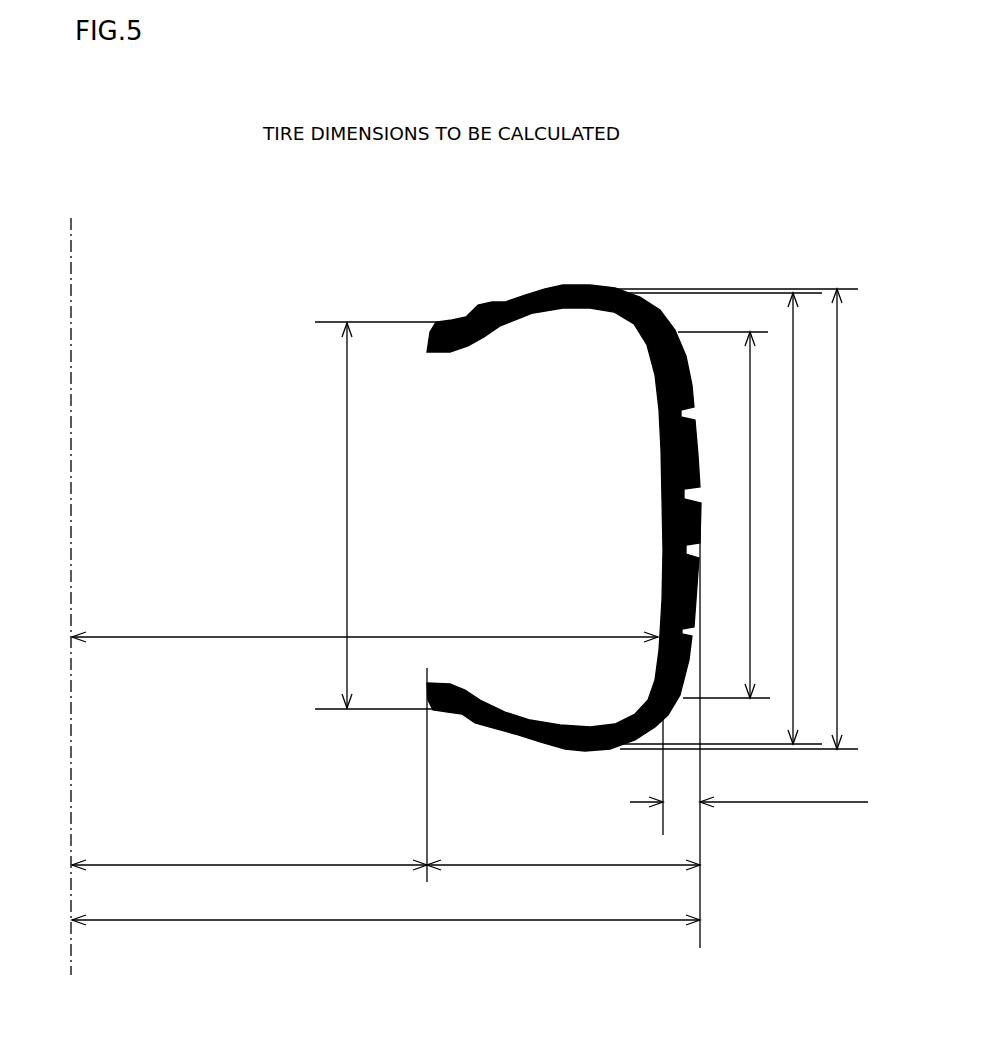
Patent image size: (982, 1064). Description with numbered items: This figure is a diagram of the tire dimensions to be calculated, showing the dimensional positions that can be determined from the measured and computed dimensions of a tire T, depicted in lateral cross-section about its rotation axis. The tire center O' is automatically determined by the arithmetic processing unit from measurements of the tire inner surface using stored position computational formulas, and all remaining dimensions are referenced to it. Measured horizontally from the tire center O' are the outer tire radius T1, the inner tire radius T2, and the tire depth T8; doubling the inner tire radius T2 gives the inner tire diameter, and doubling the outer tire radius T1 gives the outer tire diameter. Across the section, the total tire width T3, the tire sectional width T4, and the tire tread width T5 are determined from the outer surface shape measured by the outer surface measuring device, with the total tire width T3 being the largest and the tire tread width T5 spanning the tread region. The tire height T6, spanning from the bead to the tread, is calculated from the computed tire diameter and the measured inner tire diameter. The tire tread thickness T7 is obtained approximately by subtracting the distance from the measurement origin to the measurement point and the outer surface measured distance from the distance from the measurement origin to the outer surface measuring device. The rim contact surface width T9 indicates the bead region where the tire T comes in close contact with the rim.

The tire T is at (511, 300).
The tire center O' is at (73, 580).
The outer tire radius T1 is at (386, 730).
The inner tire radius T2 is at (249, 851).
The total tire width T3 is at (710, 519).
The tire sectional width T4 is at (695, 518).
The tire tread width T5 is at (724, 515).
The tire height T6 is at (563, 775).
The tire tread thickness T7 is at (749, 776).
The tire depth T8 is at (365, 621).
The rim contact surface width T9 is at (382, 515).